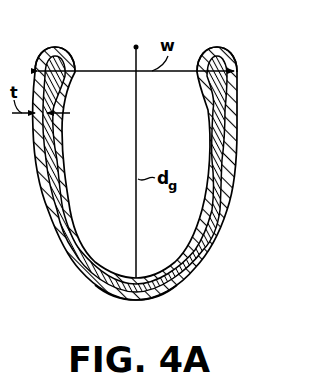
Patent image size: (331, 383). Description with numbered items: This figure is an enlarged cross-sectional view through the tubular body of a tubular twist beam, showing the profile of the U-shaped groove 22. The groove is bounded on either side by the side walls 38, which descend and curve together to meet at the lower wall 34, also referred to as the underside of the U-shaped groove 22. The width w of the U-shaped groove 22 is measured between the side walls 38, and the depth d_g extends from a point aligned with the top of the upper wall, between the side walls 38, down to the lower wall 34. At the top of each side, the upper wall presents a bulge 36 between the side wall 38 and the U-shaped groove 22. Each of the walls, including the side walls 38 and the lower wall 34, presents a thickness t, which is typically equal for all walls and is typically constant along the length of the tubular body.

The U-shaped groove 22 is at (66, 152).
The lower wall 34 is at (142, 293).
The bulge 36 is at (60, 49).
The side walls 38 is at (237, 127).